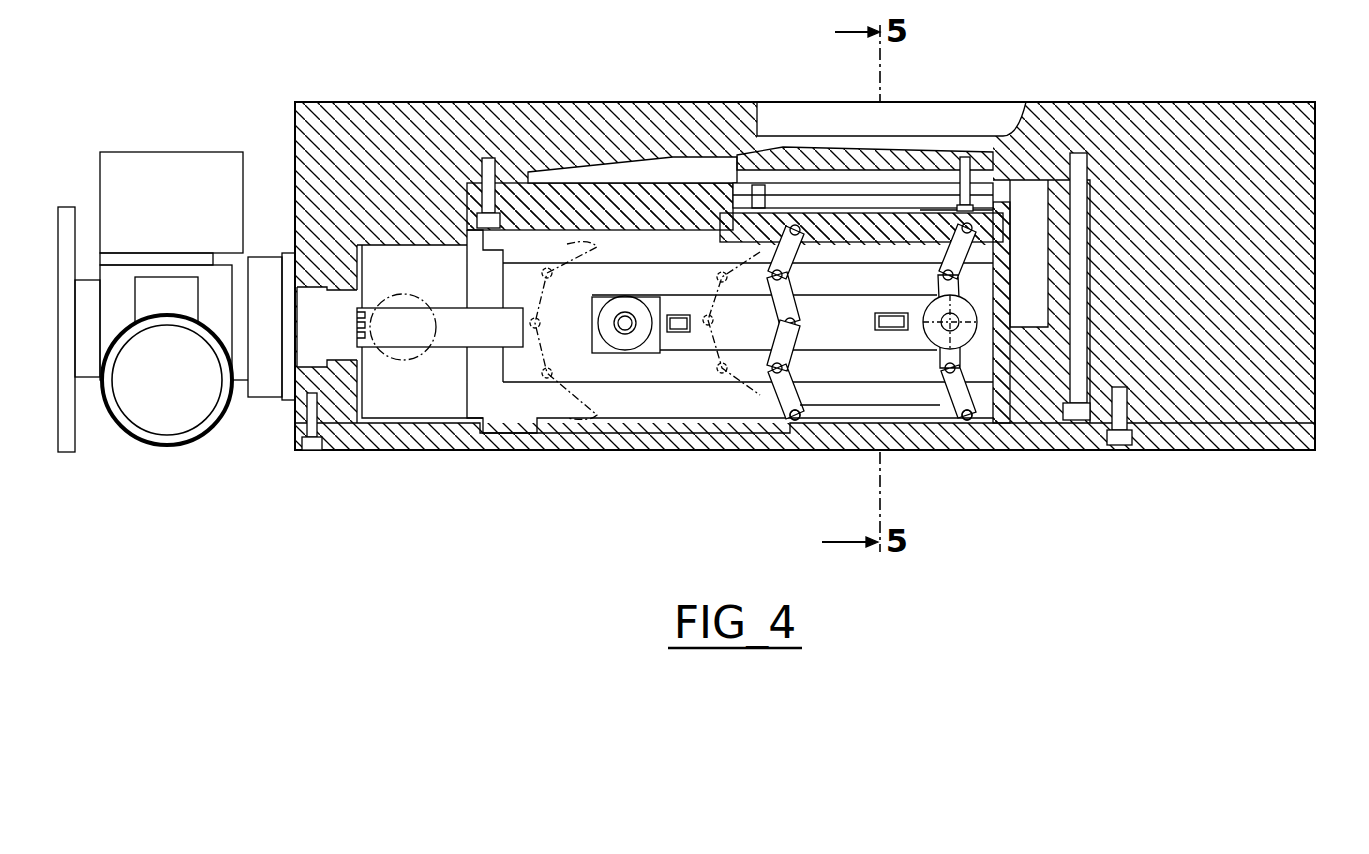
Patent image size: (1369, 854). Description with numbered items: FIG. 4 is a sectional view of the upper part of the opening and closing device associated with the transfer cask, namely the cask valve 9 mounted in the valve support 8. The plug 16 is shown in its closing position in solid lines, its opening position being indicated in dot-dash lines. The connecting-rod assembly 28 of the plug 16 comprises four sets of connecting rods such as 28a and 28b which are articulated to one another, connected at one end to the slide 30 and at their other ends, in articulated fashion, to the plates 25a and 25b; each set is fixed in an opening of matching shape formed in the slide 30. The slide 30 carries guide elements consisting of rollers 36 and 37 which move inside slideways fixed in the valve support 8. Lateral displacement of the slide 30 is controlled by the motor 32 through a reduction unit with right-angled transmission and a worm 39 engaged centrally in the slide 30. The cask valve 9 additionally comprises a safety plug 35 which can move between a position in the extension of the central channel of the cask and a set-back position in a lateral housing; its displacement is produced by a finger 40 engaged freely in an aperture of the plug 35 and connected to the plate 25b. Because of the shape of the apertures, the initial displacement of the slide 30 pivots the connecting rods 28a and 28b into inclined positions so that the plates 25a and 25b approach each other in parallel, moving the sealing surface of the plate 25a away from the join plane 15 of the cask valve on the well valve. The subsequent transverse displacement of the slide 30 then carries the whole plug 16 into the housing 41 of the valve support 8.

The valve support 8 is at (1300, 143).
The cask valve 9 is at (1320, 383).
The join plane 15 is at (1222, 447).
The plug 16 is at (875, 202).
The plate 25a is at (903, 425).
The plate 25b is at (920, 210).
The connecting-rod assembly 28 is at (812, 418).
The connecting rod 28a is at (997, 390).
The connecting rod 28b is at (1012, 245).
The slide 30 is at (678, 334).
The motor 32 is at (176, 302).
The additional safety plug 35 is at (852, 150).
The roller 36 is at (626, 352).
The roller 37 is at (920, 325).
The worm 39 is at (453, 342).
The finger 40 is at (995, 152).
The housing 41 is at (372, 420).